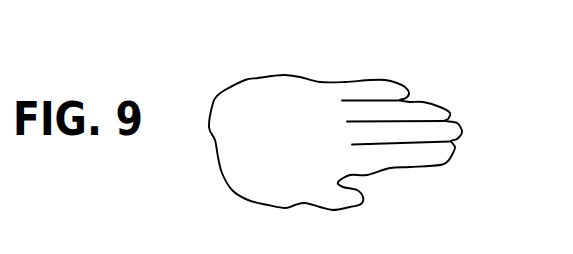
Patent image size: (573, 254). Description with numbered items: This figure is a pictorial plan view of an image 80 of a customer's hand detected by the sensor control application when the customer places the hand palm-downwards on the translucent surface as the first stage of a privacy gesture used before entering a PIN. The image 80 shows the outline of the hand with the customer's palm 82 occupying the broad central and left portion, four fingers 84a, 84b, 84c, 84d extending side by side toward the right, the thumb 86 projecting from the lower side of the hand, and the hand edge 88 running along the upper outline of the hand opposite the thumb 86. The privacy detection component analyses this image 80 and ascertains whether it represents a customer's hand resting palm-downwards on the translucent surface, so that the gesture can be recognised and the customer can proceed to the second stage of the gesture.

The image 80 is at (326, 130).
The palm 82 is at (270, 108).
The finger 84a is at (393, 80).
The finger 84b is at (447, 108).
The finger 84c is at (463, 128).
The finger 84d is at (447, 153).
The thumb 86 is at (362, 203).
The hand edge 88 is at (298, 77).